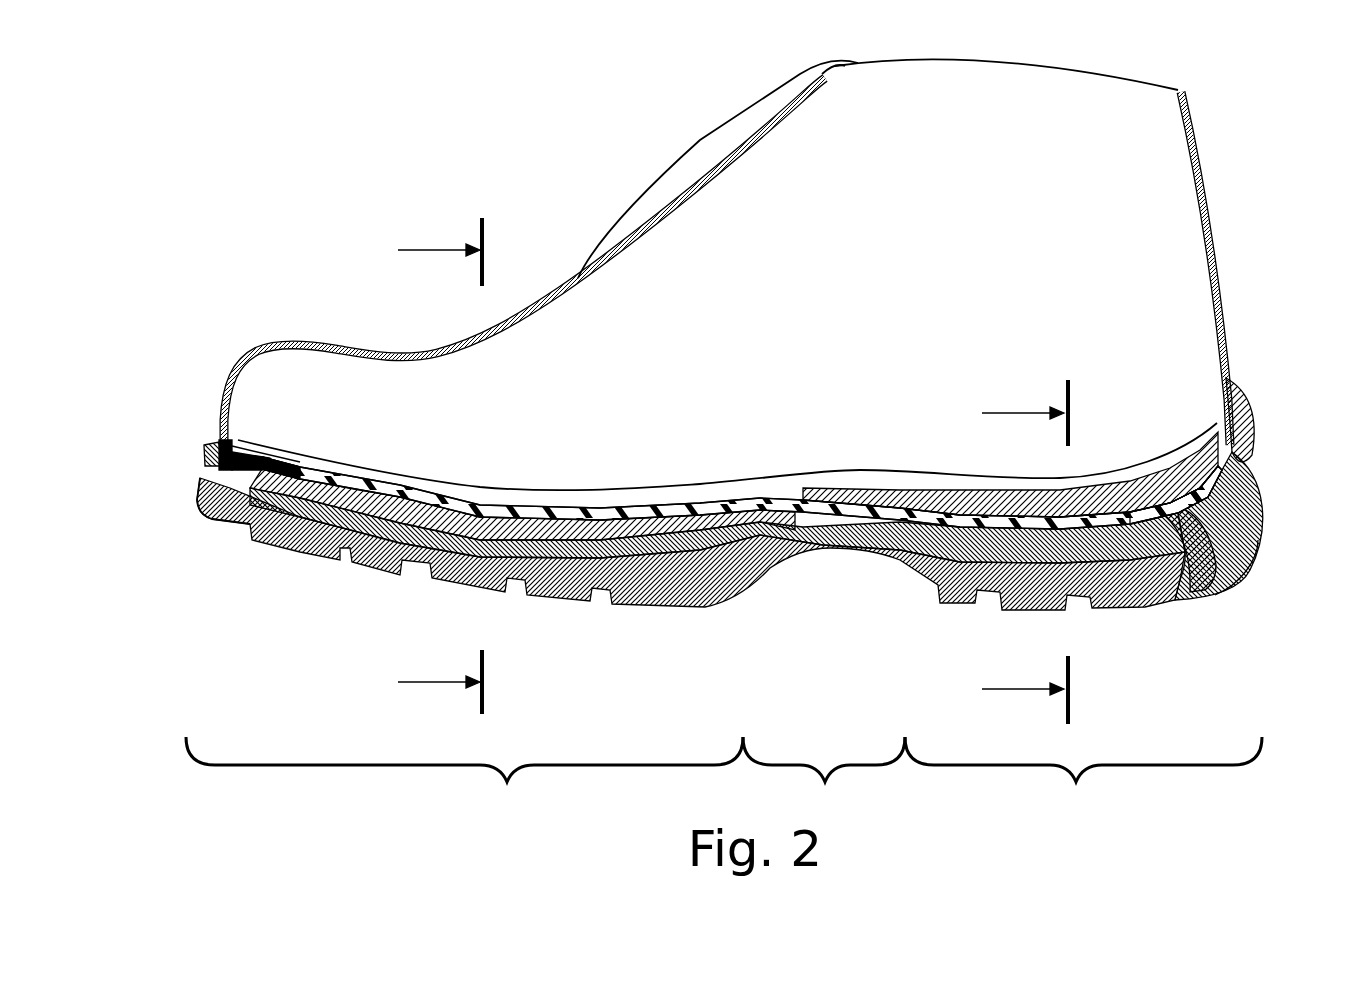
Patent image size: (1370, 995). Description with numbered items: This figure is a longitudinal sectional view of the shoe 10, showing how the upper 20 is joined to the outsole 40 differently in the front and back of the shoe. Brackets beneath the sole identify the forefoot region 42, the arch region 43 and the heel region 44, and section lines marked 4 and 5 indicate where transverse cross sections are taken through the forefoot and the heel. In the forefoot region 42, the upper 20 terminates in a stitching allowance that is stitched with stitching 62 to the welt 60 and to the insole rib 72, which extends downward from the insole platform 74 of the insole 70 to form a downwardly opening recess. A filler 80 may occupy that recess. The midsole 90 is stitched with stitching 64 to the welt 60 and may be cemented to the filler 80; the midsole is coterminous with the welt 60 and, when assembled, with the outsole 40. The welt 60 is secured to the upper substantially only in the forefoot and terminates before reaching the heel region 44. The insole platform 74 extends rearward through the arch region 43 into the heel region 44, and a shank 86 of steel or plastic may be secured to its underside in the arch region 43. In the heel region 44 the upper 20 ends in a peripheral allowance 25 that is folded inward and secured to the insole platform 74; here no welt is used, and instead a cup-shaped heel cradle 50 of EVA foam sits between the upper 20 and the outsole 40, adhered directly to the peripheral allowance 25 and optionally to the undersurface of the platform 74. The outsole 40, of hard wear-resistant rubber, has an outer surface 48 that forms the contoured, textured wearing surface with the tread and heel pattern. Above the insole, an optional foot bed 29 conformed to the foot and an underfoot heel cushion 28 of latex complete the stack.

The shoe 10 is at (466, 132).
The upper 20 is at (1227, 310).
The peripheral allowance 25 is at (1195, 548).
The underfoot heel cushion 28 is at (436, 480).
The foot bed 29 is at (936, 498).
The outsole 40 is at (1266, 492).
The forefoot region 42 is at (464, 777).
The arch region 43 is at (824, 777).
The heel region 44 is at (1083, 777).
The outer surface 48 is at (1248, 572).
The heel cradle 50 is at (1250, 400).
The welt 60 is at (240, 460).
The stitching 62 is at (232, 420).
The stitching 64 is at (207, 462).
The insole 70 is at (552, 503).
The insole rib 72 is at (266, 462).
The insole platform 74 is at (1175, 494).
The filler 80 is at (318, 492).
The shank 86 is at (812, 516).
The midsole 90 is at (263, 508).
The section line 4- 4 is at (440, 466).
The section line 5- 5 is at (1013, 552).